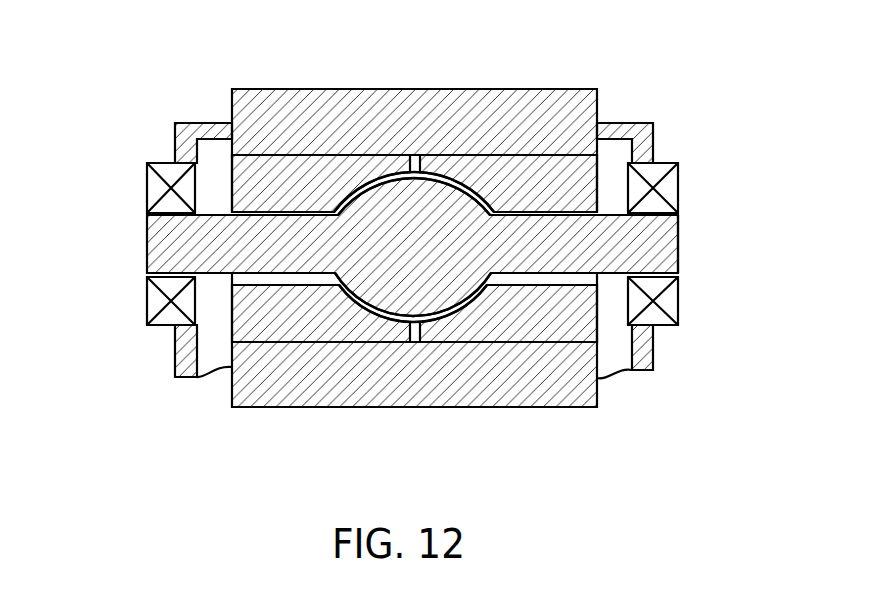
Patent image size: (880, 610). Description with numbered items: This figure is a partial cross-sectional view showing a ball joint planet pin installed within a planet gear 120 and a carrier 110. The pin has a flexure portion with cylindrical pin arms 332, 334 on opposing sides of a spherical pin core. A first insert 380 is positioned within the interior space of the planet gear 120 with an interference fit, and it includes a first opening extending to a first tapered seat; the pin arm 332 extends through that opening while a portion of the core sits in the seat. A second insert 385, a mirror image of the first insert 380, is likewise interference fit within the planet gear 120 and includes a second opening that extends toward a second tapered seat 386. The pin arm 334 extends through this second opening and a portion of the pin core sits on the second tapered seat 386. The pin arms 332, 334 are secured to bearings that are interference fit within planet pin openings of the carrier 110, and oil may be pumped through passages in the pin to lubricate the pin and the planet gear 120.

The carrier 110 is at (205, 150).
The planet gear 120 is at (575, 115).
The pin arm 332 is at (167, 250).
The pin arm 334 is at (660, 245).
The first insert 380 is at (316, 325).
The second insert 385 is at (547, 325).
The second tapered seat 386 is at (468, 312).